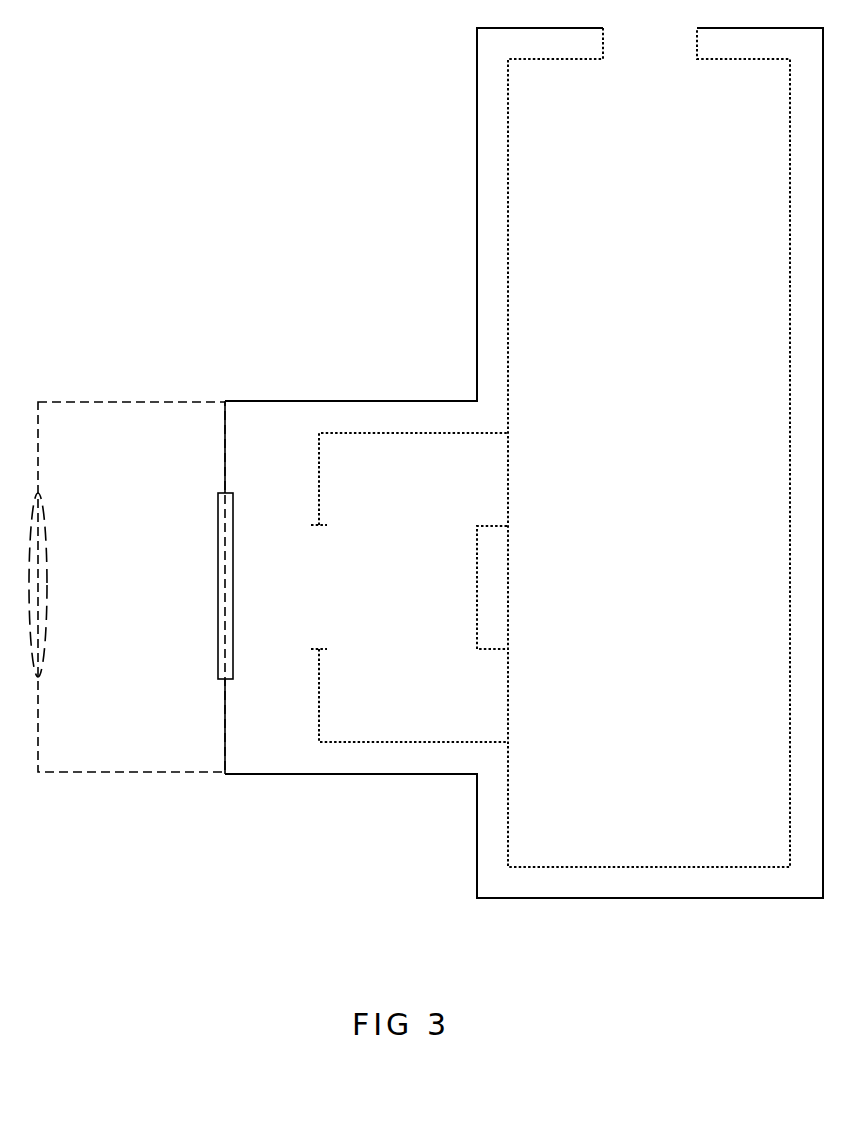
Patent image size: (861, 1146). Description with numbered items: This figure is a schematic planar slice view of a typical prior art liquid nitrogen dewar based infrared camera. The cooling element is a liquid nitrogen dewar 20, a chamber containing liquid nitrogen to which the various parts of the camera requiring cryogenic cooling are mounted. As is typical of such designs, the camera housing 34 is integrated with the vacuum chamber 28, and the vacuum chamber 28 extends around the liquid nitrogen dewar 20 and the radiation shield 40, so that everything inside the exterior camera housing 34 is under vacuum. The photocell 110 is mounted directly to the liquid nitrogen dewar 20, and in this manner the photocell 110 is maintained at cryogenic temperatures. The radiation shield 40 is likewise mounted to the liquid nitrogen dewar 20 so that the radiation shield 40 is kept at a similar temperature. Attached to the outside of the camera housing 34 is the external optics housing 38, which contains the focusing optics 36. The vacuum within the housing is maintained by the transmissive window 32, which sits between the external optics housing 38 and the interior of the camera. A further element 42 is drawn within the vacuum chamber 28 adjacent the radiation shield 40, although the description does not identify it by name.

The liquid nitrogen dewar 20 is at (664, 290).
The vacuum chamber 28 is at (493, 163).
The camera housing 34 is at (477, 273).
The external optics housing 38 is at (134, 402).
The focusing optics 36 is at (43, 508).
The transmissive window 32 is at (218, 584).
The coupling element 42 is at (327, 525).
The radiation shield 40 is at (383, 742).
The photocell 110 is at (477, 587).